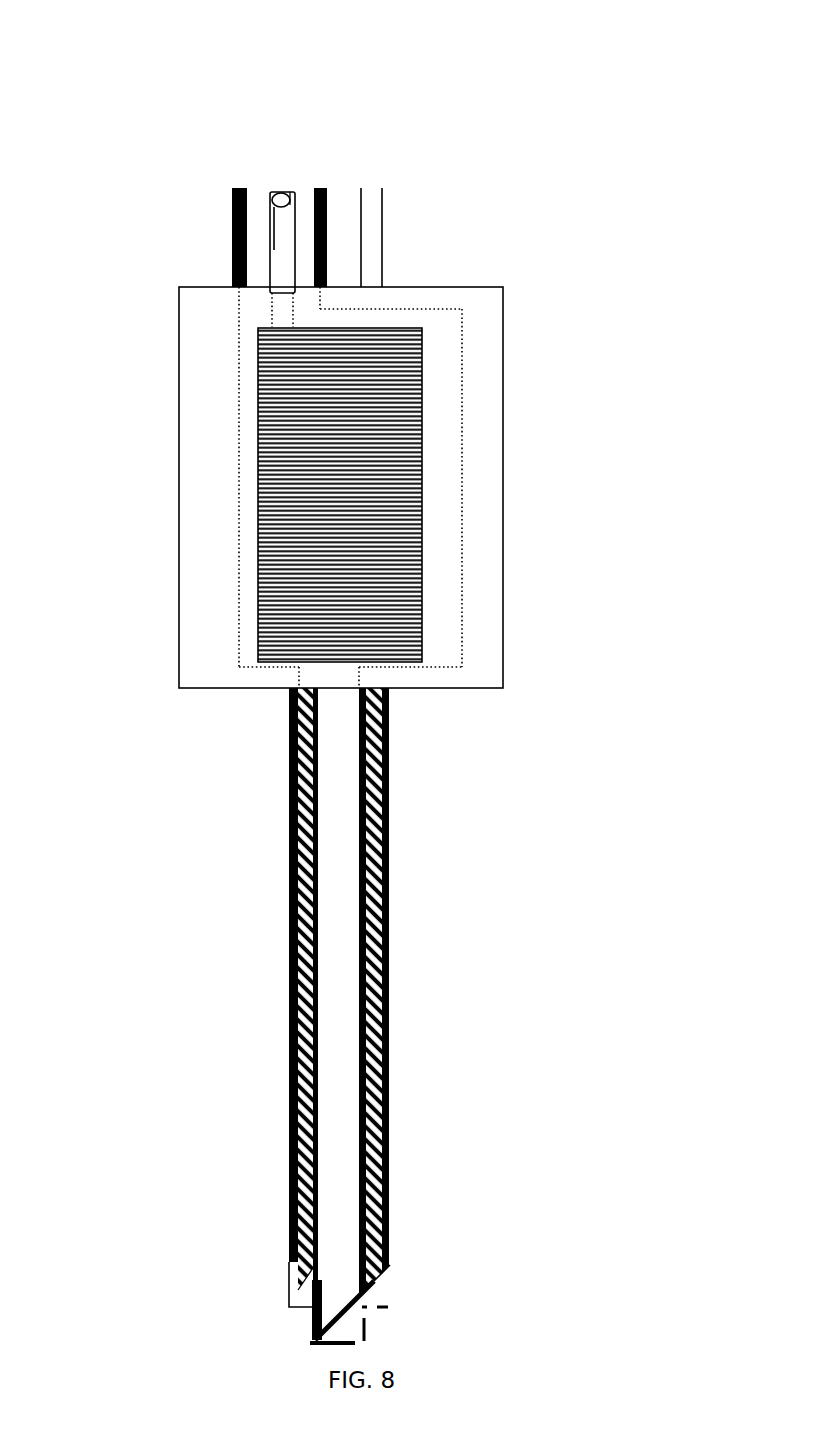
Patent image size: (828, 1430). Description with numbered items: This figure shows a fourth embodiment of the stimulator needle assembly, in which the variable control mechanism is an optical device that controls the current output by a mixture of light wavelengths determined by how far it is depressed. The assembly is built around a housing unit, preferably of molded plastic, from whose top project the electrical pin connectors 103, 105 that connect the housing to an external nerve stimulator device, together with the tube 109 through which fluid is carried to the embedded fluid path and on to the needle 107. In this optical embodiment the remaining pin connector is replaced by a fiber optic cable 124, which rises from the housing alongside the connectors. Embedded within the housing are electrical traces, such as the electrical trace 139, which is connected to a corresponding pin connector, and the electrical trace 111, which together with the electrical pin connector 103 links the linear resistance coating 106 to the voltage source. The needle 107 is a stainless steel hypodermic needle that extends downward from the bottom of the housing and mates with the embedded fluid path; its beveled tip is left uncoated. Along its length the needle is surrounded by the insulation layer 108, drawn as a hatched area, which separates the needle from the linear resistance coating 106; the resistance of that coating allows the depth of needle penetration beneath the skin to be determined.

The electrical pin connector 103 is at (232, 227).
The electrical pin connector 105 is at (320, 188).
The linear resistance coating 106 is at (389, 865).
The needle 107 is at (312, 1327).
The insulation layer 108 is at (210, 1270).
The tube 109 is at (382, 251).
The electrical trace 111 is at (239, 485).
The fiber optic cable 124 is at (279, 188).
The electrical trace 139 is at (455, 475).